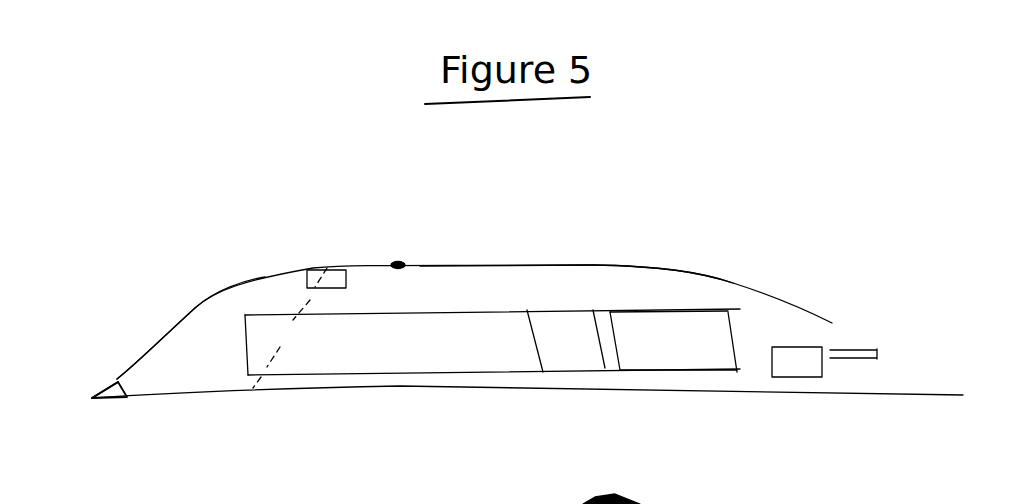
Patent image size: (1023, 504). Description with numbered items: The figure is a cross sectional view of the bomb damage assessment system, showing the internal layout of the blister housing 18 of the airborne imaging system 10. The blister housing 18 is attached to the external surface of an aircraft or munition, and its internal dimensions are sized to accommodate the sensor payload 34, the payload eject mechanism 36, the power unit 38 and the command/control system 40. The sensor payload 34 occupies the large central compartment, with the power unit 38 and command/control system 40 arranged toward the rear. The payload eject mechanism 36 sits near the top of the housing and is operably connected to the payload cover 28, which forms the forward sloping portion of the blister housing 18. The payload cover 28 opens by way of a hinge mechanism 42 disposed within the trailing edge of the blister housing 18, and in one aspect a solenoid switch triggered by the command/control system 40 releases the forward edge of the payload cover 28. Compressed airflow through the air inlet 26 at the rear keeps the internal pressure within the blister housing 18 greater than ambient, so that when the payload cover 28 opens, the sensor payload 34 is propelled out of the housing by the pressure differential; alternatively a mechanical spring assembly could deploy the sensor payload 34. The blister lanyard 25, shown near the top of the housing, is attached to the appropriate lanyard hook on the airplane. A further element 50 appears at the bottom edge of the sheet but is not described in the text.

The airborne imaging system 10 is at (786, 264).
The blister housing 18 is at (592, 265).
The blister lanyard 25 is at (402, 264).
The air inlet 26 is at (876, 352).
The payload cover 28 is at (205, 300).
The sensor payload 34 is at (402, 343).
The payload eject mechanism 36 is at (335, 272).
The power unit 38 is at (805, 350).
The command/control system 40 is at (667, 338).
The hinge mechanism 42 is at (120, 398).
The lower figure element 50 is at (707, 503).